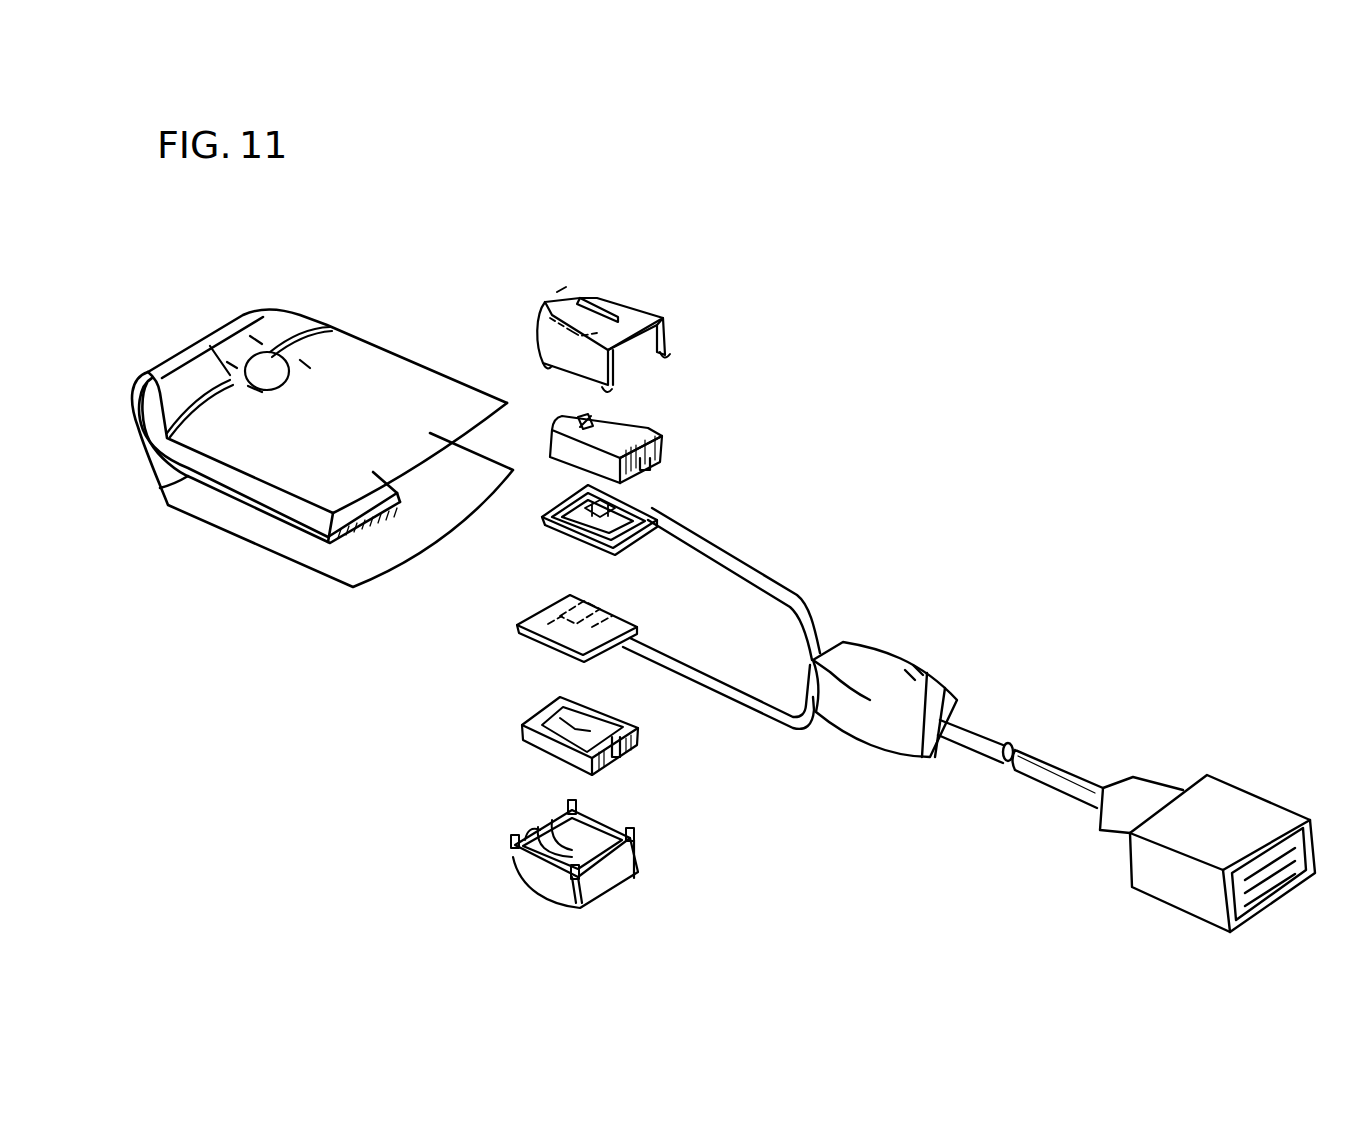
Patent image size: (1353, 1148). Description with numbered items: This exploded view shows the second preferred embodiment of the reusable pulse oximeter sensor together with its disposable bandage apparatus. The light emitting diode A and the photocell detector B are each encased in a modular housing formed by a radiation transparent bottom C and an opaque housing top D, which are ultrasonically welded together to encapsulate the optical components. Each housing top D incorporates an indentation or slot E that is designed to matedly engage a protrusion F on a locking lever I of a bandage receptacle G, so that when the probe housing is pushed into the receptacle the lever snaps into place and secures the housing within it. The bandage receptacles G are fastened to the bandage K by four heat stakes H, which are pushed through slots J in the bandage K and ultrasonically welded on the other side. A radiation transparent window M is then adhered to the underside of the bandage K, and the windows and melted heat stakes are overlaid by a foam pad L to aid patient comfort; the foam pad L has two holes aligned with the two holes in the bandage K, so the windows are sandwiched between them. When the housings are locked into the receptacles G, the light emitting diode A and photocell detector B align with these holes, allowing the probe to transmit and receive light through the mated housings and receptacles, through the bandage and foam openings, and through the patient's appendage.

The light emitting diode A is at (630, 503).
The photocell detector B is at (560, 637).
The radiation transparent bottom C is at (543, 607).
The opaque housing top D is at (663, 443).
The indentation or slot E is at (600, 420).
The protrusion F is at (570, 333).
The bandage receptacle G is at (637, 307).
The heat stake H is at (663, 363).
The locking lever I is at (557, 293).
The slot J is at (245, 362).
The bandage K is at (357, 412).
The foam pad L is at (258, 508).
The radiation transparent window M is at (267, 371).